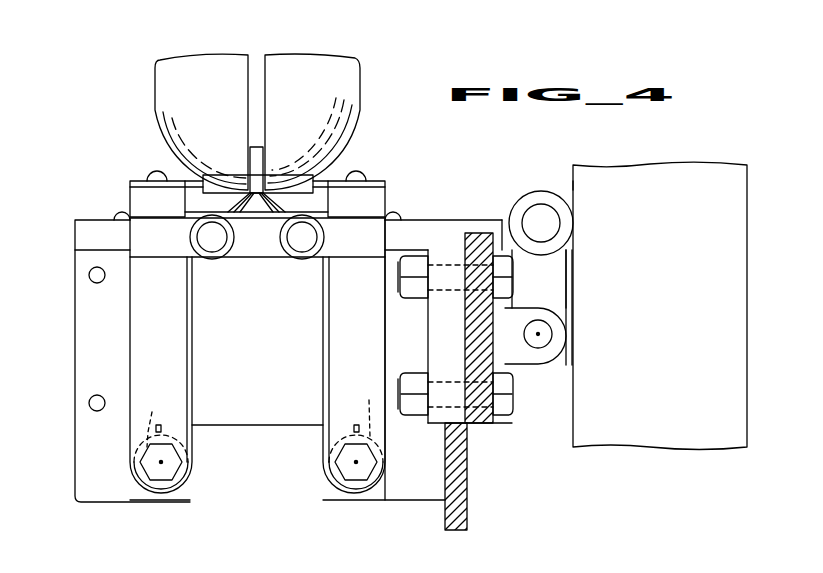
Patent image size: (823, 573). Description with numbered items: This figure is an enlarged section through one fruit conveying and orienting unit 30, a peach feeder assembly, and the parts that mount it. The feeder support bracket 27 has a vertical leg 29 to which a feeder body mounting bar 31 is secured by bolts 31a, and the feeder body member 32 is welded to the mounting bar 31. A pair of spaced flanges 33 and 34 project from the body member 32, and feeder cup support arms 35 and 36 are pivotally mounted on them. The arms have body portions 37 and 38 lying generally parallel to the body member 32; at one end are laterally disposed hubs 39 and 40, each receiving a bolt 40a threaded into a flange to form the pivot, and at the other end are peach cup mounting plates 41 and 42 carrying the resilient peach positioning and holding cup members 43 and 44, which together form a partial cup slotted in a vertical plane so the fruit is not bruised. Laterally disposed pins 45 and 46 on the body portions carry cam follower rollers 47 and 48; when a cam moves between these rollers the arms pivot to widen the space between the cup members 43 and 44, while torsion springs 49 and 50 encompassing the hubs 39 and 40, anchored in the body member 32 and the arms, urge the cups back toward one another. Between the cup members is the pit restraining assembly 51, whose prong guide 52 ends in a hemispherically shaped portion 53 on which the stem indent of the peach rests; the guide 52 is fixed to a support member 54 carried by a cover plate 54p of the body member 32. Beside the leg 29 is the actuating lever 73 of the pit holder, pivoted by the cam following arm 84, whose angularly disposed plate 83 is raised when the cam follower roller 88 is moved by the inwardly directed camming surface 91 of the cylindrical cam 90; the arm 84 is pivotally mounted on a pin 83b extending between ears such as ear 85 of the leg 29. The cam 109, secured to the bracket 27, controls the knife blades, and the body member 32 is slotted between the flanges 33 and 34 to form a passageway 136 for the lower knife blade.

The fruit conveying and orienting unit 30 is at (131, 166).
The feeder support bracket 27 is at (479, 229).
The vertical leg 29 is at (478, 418).
The feeder body mounting bar 31 is at (437, 333).
The bolts 31a is at (402, 388).
The feeder body member 32 is at (100, 337).
The flange 33 is at (190, 488).
The flange 34 is at (328, 491).
The feeder cup support arm 35 is at (168, 326).
The feeder cup support arm 36 is at (349, 321).
The body portion 37 is at (174, 377).
The body portion 38 is at (371, 371).
The hub 39 is at (157, 419).
The hub 40 is at (356, 412).
The bolt 40a is at (400, 445).
The peach cup mounting plate 41 is at (178, 181).
The peach cup mounting plate 42 is at (333, 181).
The peach positioning and holding cup member 43 is at (220, 96).
The peach positioning and holding cup member 44 is at (317, 96).
The pin 45 is at (207, 234).
The pin 46 is at (306, 232).
The cam follower roller 47 is at (193, 246).
The cam follower roller 48 is at (321, 247).
The torsion spring 49 is at (135, 479).
The torsion spring 50 is at (384, 471).
The pit restraining assembly 51 is at (260, 146).
The prong guide 52 is at (235, 205).
The hemispherically shaped portion 53 is at (258, 160).
The support member 54 is at (271, 213).
The cover plate 54p is at (272, 248).
The actuating lever 73 is at (570, 302).
The angularly disposed plate 83 is at (567, 350).
The pin 83b is at (538, 334).
The cam following arm 84 is at (557, 287).
The ear 85 is at (512, 340).
The cam follower roller 88 is at (560, 218).
The cylindrical cam 90 is at (684, 309).
The camming surface 91 is at (573, 181).
The cam 109 is at (462, 473).
The passageway 136 is at (194, 359).